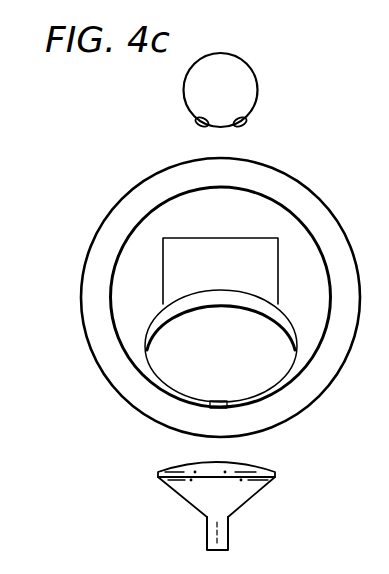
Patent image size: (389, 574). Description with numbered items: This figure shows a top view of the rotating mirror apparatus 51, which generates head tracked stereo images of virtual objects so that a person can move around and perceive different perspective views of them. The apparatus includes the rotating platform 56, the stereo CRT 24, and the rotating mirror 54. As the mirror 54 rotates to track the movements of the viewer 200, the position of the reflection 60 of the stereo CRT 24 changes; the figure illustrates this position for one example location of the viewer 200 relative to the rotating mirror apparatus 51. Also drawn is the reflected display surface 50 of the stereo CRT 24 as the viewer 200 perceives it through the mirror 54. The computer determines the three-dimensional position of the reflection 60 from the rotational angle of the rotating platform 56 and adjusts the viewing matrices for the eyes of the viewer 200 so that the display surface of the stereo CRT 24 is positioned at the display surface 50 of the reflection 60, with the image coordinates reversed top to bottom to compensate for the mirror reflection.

The viewer 200 is at (192, 90).
The rotating mirror apparatus 51 is at (198, 317).
The rotating platform 56 is at (102, 253).
The stereo CRT 24 is at (173, 243).
The mirror 54 is at (266, 367).
The reflected display surface 50 is at (177, 463).
The reflection 60 is at (222, 495).